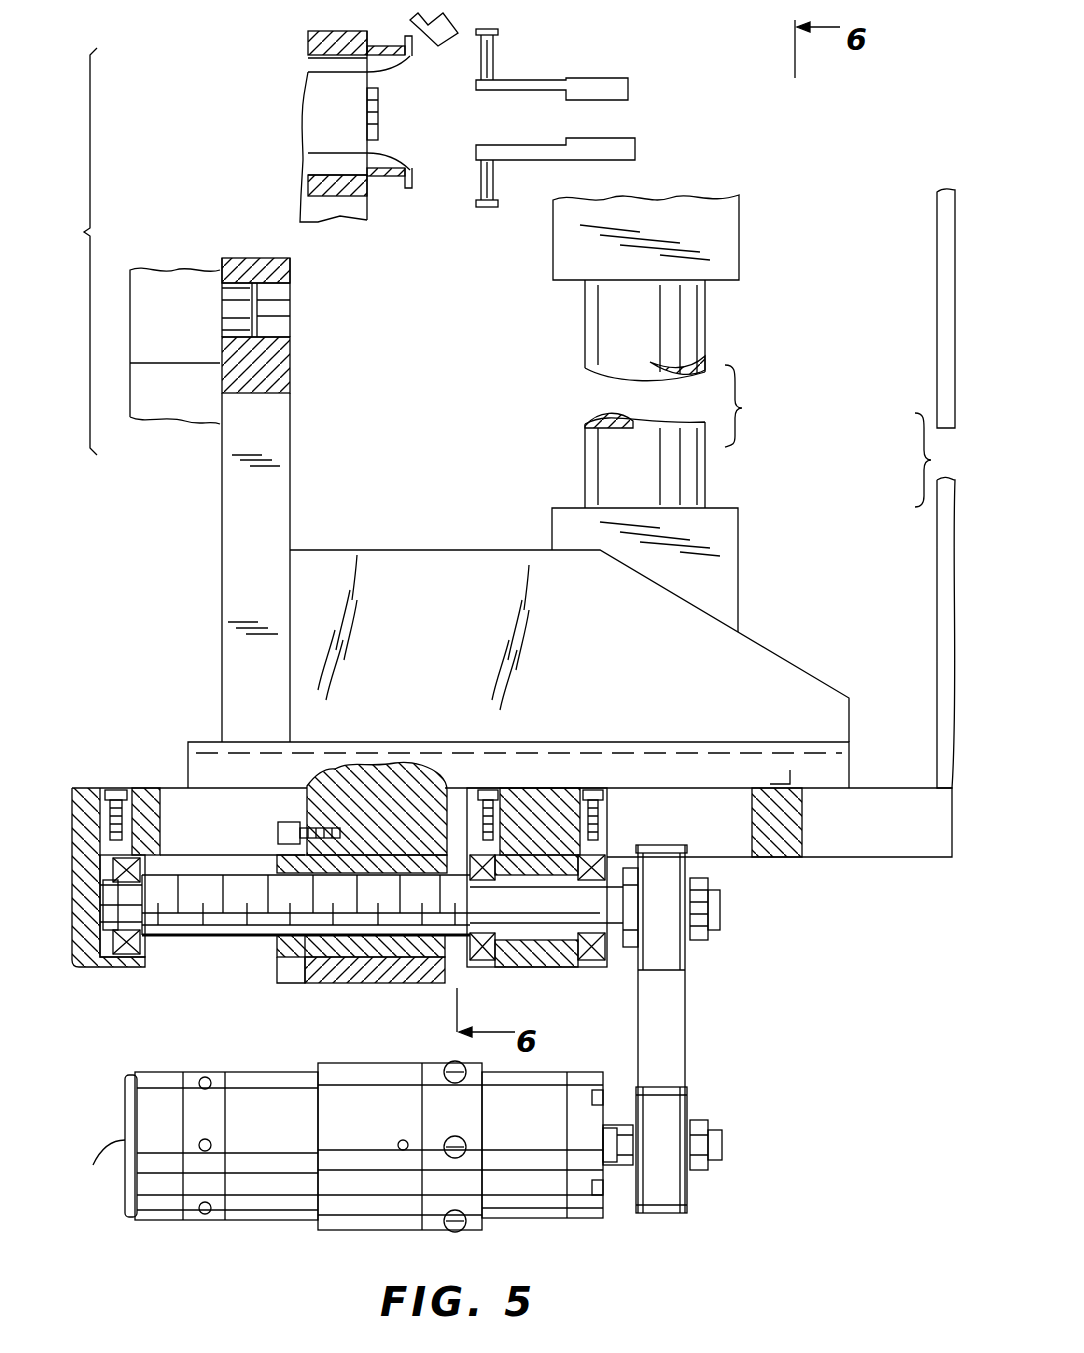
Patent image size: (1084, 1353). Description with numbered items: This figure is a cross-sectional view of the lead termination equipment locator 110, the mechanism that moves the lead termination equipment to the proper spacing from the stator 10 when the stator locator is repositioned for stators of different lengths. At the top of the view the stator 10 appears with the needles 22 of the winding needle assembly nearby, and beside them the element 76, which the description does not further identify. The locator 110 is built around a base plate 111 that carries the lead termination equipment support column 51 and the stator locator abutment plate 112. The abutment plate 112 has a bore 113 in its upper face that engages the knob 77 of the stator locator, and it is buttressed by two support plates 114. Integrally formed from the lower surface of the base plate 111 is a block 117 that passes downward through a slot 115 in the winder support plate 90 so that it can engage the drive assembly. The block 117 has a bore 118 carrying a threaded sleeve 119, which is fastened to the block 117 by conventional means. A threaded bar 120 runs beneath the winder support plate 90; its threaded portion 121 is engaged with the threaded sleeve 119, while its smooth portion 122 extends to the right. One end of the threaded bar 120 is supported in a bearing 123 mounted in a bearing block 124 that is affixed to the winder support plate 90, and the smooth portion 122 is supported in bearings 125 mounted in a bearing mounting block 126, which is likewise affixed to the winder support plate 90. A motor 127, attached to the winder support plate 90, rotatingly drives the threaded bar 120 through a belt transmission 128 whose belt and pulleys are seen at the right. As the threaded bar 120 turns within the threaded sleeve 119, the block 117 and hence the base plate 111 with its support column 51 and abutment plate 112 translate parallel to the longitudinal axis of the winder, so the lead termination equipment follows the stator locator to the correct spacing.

The stator 10 is at (379, 198).
The needles 22 is at (564, 81).
The lead termination equipment support column 51 is at (713, 508).
The support block 76 is at (190, 348).
The knob 77 is at (228, 296).
The winder support plate 90 is at (895, 838).
The lead termination equipment locator 110 is at (430, 457).
The base plate 111 is at (187, 766).
The stator locator abutment plate 112 is at (292, 488).
The bore 113 is at (290, 331).
The support plates 114 is at (474, 602).
The slot 115 is at (742, 856).
The block 117 is at (345, 988).
The bore 118 is at (408, 988).
The threaded sleeve 119 is at (283, 984).
The threaded bar 120 is at (350, 933).
The threaded portion 121 is at (396, 906).
The smooth portion 122 is at (601, 905).
The bearing 123 is at (124, 968).
The bearing block 124 is at (85, 970).
The bearings 125 is at (490, 967).
The bearing mounting block 126 is at (578, 897).
The motor 127 is at (530, 1218).
The belt transmission 128 is at (686, 972).